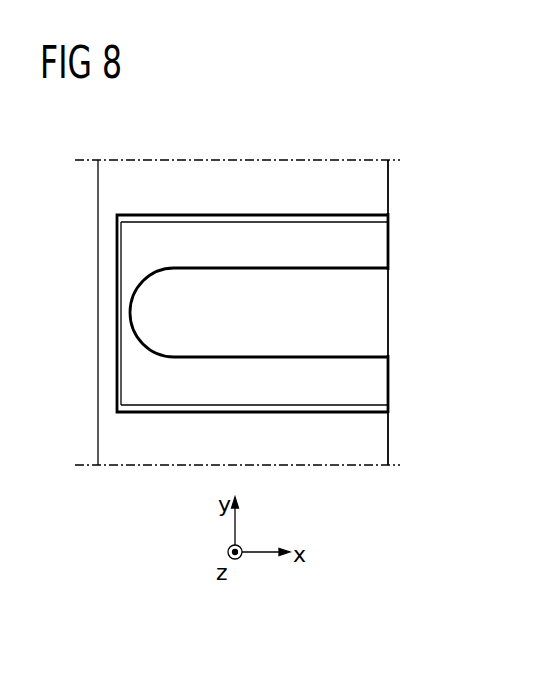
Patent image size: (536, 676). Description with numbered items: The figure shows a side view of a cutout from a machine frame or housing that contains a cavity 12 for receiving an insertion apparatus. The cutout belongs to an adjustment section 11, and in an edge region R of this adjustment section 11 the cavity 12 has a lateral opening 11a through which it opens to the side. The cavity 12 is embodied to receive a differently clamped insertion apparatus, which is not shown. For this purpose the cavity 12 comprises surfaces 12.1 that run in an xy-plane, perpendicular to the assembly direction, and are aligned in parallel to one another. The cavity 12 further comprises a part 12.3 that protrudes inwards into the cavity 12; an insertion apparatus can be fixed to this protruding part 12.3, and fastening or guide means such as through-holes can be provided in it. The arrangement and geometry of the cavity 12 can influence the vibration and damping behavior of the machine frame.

The adjustment section 11 is at (362, 202).
The lateral opening 11a is at (395, 316).
The cavity 12 is at (183, 344).
The surfaces 12.1 is at (268, 220).
The protruding part 12.3 is at (378, 378).
The edge region R is at (369, 424).